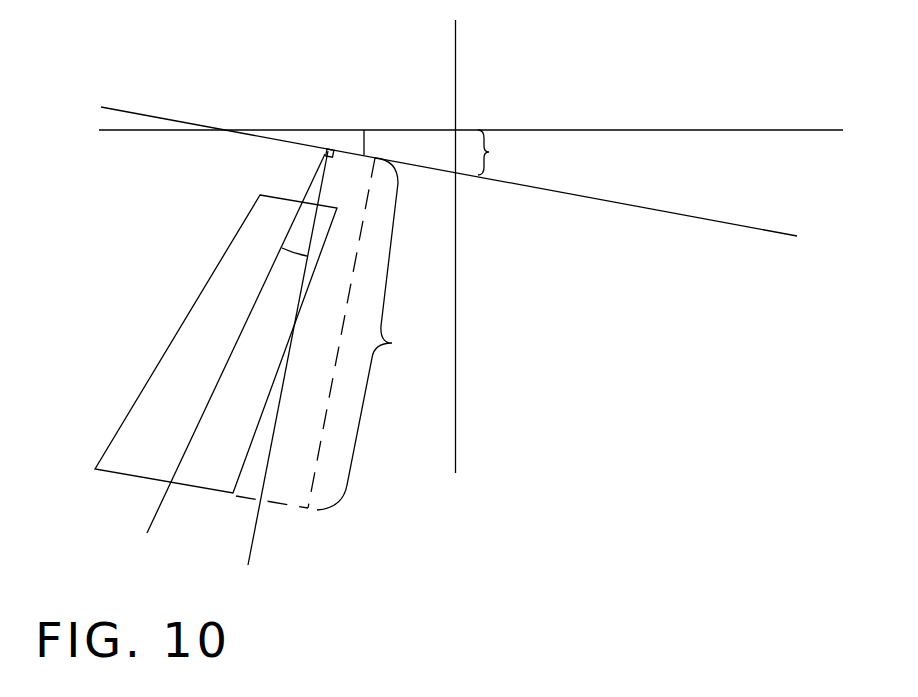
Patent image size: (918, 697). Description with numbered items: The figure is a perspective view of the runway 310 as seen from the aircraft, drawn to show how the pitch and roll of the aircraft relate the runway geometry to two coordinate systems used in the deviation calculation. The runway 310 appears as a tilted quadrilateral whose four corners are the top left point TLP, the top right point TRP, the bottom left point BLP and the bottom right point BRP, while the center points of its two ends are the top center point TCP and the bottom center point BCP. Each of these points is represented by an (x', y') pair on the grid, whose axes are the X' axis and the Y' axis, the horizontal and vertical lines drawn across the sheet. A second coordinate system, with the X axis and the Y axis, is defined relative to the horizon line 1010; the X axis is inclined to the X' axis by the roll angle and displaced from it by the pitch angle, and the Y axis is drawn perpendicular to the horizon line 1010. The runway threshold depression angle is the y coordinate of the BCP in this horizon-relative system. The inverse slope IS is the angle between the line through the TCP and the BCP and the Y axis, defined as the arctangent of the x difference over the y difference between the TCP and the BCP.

The runway 310 is at (149, 381).
The horizon line 1010 is at (702, 219).
The top center point TCP is at (301, 202).
The top left point TLP is at (260, 195).
The top right point TRP is at (340, 209).
The bottom left point BLP is at (95, 469).
The bottom center point BCP is at (169, 484).
The bottom right point BRP is at (233, 494).
The inverse slope IS is at (280, 250).
The x axis X is at (810, 239).
The x' axis X' is at (484, 128).
The y axis Y is at (288, 362).
The y' axis Y' is at (469, 236).